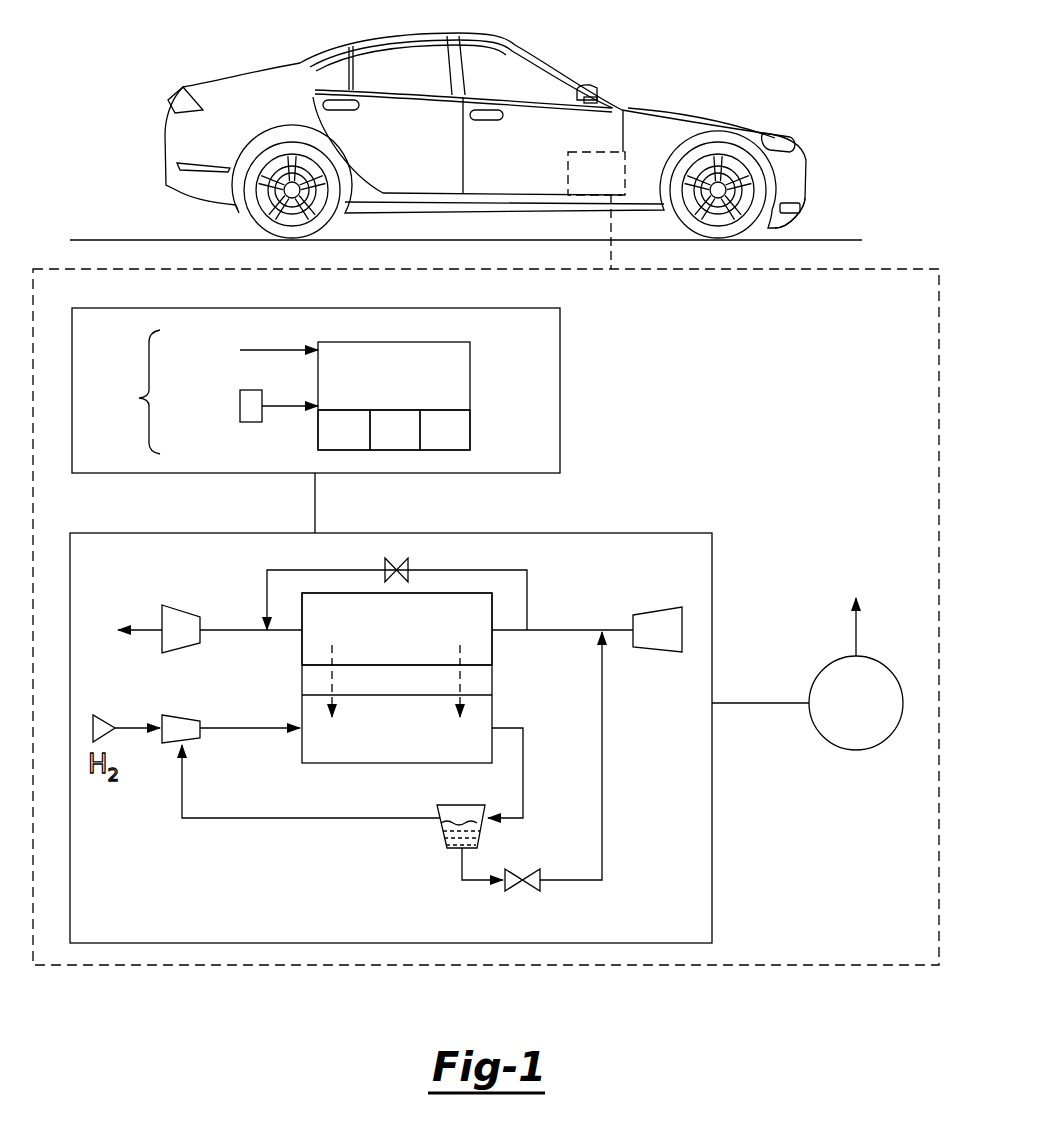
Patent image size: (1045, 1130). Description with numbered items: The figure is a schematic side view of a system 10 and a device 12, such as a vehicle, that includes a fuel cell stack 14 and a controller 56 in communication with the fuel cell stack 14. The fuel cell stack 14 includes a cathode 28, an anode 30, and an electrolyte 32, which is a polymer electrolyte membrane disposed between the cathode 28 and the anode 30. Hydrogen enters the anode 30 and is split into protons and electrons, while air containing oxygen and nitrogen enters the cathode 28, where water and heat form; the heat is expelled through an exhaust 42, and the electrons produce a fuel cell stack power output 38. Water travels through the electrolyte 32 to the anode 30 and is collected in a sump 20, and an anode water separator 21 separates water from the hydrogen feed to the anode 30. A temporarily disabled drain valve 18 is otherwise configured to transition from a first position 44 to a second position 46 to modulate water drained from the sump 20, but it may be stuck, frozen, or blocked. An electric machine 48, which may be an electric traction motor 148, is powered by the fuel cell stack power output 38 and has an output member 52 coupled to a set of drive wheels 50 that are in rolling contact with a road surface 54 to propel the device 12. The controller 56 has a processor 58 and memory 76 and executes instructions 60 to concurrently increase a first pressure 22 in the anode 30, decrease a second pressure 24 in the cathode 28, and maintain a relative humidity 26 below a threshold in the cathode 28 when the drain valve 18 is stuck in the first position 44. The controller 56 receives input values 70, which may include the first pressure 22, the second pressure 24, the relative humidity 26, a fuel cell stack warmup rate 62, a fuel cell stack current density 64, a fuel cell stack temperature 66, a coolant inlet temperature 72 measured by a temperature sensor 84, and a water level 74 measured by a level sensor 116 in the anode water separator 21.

The system 10 is at (596, 210).
The device 12 is at (517, 124).
The fuel cell stack 14 is at (540, 705).
The temporarily disabled drain valve 18 is at (528, 872).
The sump 20 is at (460, 805).
The anode water separator 21 is at (422, 838).
The first pressure 22 is at (240, 378).
The second pressure 24 is at (397, 629).
The relative humidity 26 is at (397, 629).
The cathode 28 is at (343, 593).
The anode 30 is at (330, 763).
The electrolyte 32 is at (302, 680).
The fuel cell stack power output 38 is at (864, 614).
The exhaust 42 is at (126, 628).
The first position 44 is at (515, 893).
The second position 46 is at (530, 893).
The electric machine 48 is at (807, 703).
The set of drive wheels 50 is at (777, 228).
The output member 52 is at (733, 197).
The road surface 54 is at (165, 240).
The controller 56 is at (394, 396).
The processor 58 is at (395, 430).
The instructions 60 is at (445, 430).
The fuel cell stack warmup rate 62 is at (240, 351).
The fuel cell stack current density 64 is at (240, 351).
The fuel cell stack temperature 66 is at (240, 351).
The input values 70 is at (212, 402).
The coolant inlet temperature 72 is at (252, 406).
The water level 74 is at (252, 406).
The memory 76 is at (344, 430).
The temperature sensor 84 is at (264, 448).
The level sensor 116 is at (250, 422).
The electric traction motor 148 is at (807, 703).